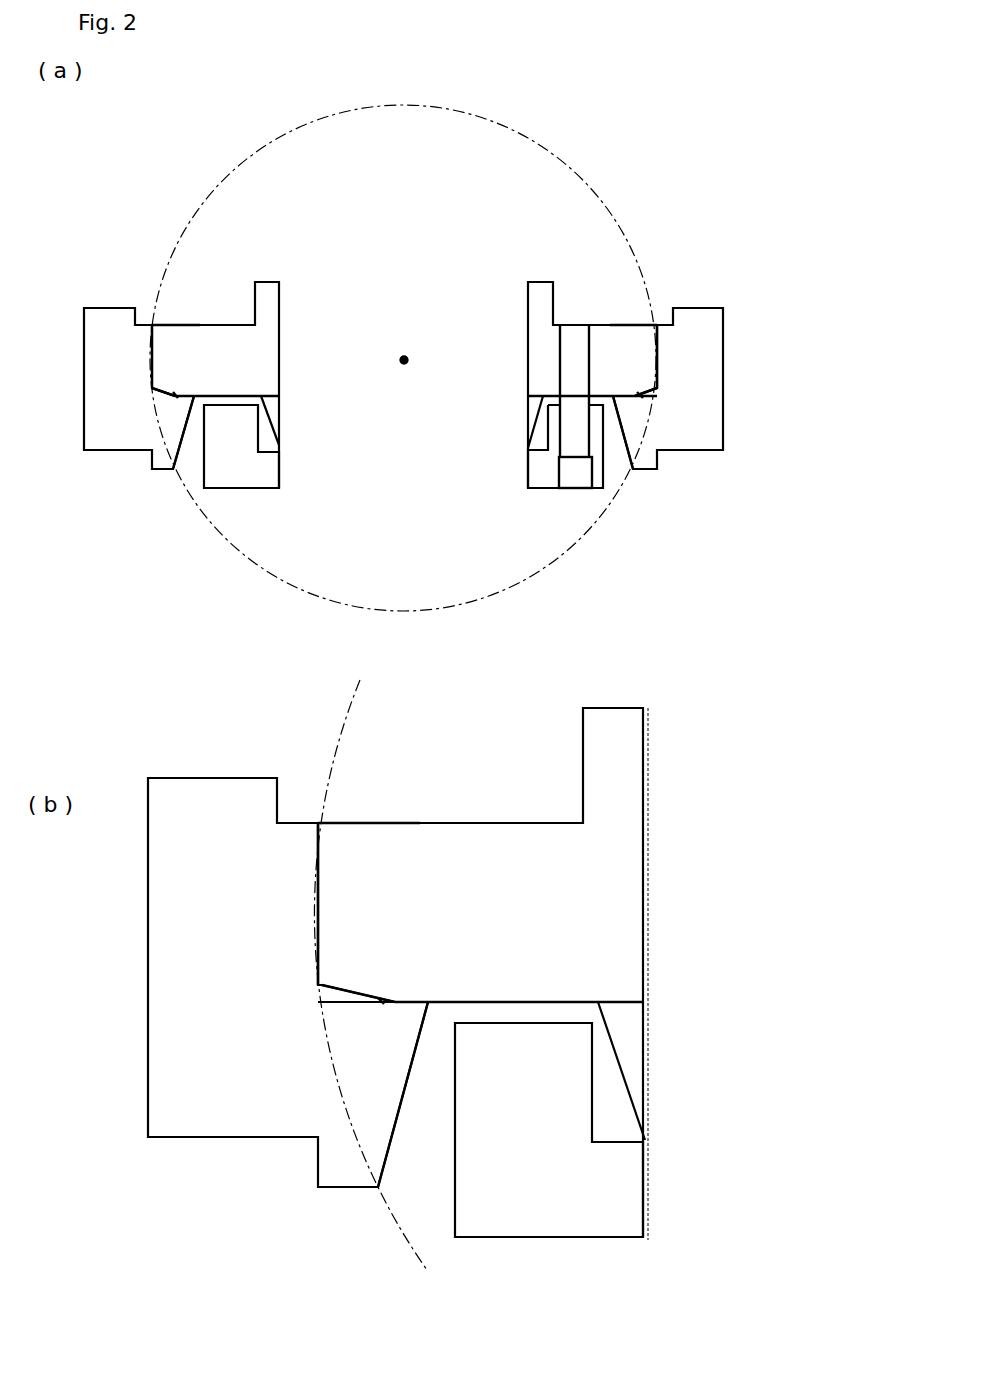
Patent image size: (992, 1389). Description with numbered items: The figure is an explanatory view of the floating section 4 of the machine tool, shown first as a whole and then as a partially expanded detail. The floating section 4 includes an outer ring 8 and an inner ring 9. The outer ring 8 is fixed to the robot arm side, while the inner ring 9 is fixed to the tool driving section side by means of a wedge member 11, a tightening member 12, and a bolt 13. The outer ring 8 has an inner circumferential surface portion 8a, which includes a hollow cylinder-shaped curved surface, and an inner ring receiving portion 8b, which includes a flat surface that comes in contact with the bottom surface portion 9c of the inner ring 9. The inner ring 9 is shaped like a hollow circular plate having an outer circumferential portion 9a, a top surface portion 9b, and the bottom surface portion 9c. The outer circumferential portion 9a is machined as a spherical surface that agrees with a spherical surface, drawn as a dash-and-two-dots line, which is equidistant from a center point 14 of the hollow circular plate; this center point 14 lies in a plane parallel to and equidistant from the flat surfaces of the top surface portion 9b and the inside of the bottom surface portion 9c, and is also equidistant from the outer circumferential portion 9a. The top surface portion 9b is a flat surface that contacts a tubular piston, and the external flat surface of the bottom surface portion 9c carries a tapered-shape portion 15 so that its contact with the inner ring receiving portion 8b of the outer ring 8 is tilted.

The floating section 4 is at (402, 69).
The outer ring 8 is at (97, 390).
The inner circumferential surface portion 8a is at (147, 343).
The inner ring receiving portion 8b is at (166, 401).
The inner ring 9 is at (258, 344).
The outer circumferential portion 9a is at (160, 342).
The top surface portion 9b is at (183, 322).
The bottom surface portion 9c is at (236, 390).
The wedge member 11 is at (268, 414).
The tightening member 12 is at (245, 478).
The bolt 13 is at (578, 325).
The center point 14 is at (404, 372).
The tapered-shape portion 15 is at (175, 394).